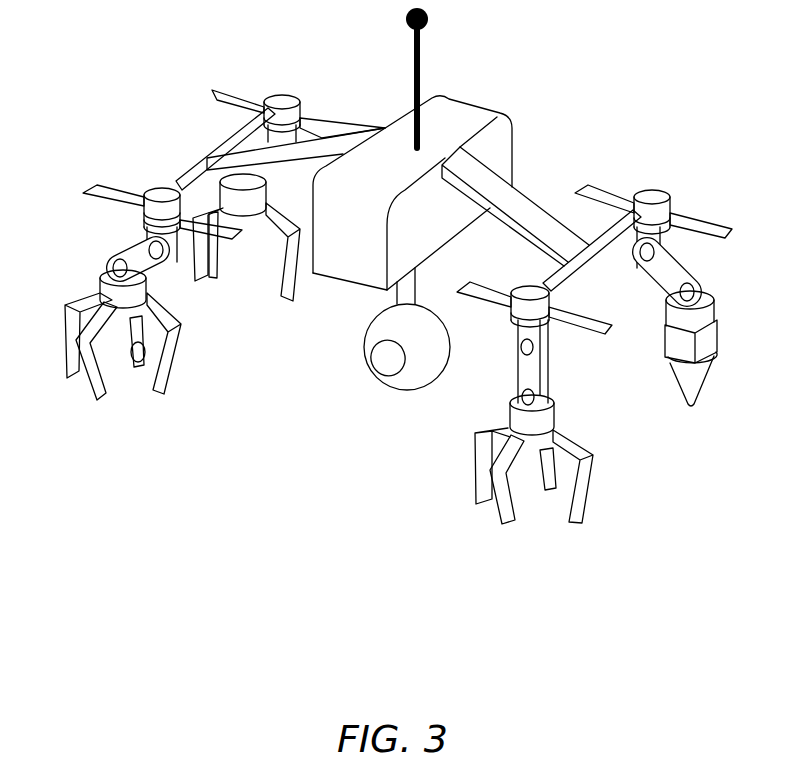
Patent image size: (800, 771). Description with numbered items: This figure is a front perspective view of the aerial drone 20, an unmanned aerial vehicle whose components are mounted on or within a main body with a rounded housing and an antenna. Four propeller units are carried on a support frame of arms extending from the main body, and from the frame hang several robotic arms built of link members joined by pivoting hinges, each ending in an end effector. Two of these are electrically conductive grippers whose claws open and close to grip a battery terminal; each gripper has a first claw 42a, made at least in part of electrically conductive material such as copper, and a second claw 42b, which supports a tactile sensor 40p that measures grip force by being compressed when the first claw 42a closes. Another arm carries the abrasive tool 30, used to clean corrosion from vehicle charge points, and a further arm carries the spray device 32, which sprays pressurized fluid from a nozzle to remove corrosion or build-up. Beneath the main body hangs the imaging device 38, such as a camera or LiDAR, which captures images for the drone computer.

The aerial drone 20 is at (482, 110).
The abrasive tool 30 is at (277, 262).
The spray device 32 is at (703, 390).
The imaging device 38 is at (383, 358).
The tactile sensor 40p is at (140, 367).
The first claw 42a is at (88, 382).
The second claw 42b is at (130, 327).